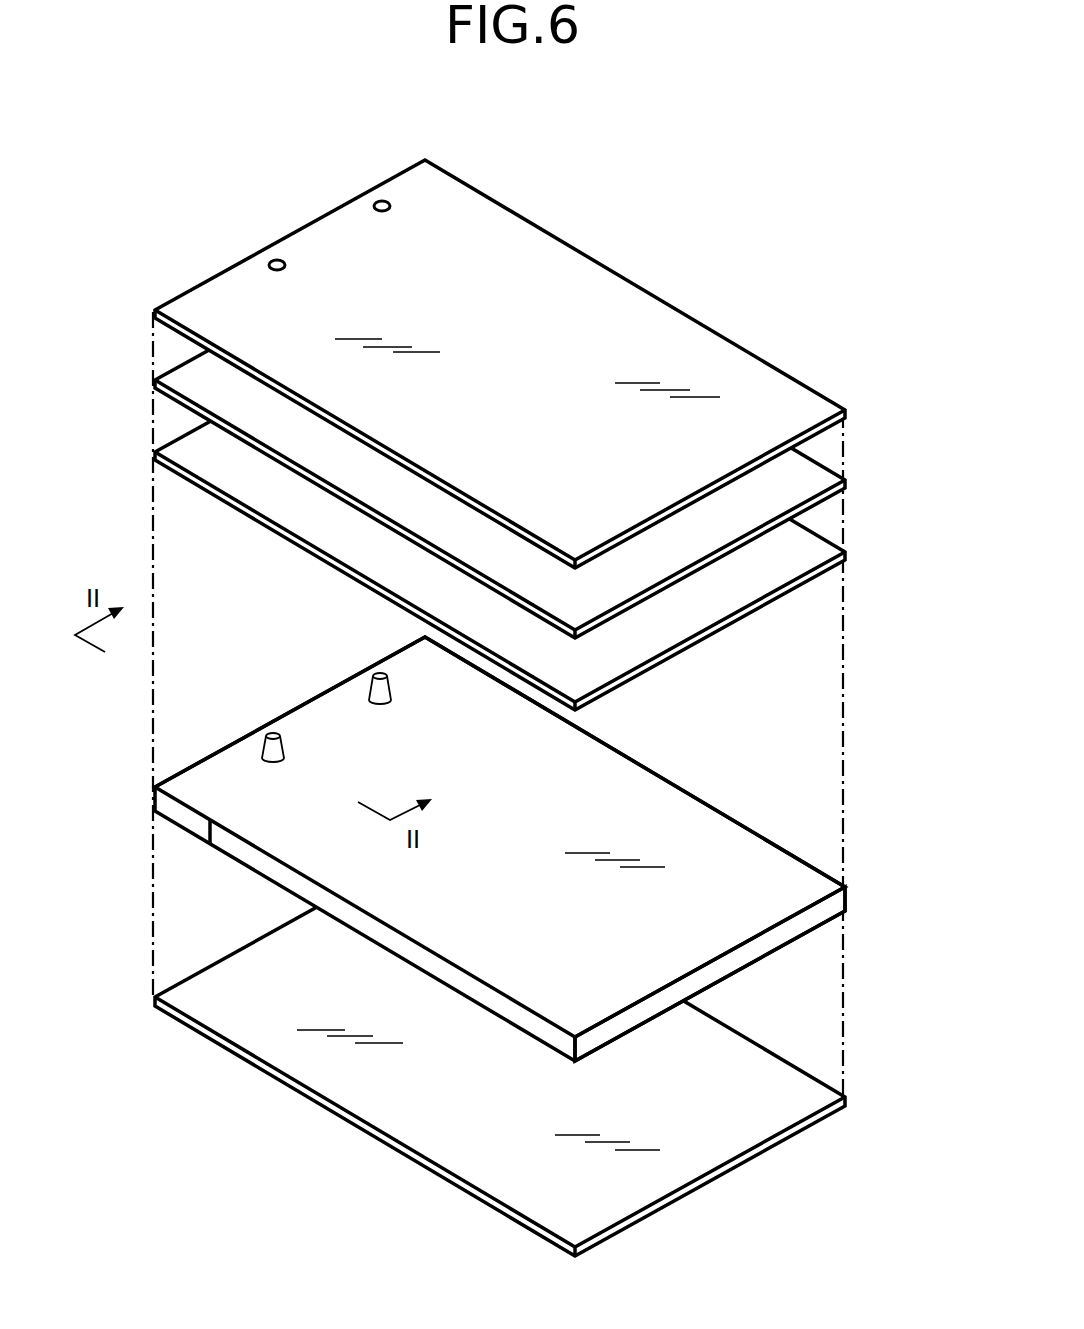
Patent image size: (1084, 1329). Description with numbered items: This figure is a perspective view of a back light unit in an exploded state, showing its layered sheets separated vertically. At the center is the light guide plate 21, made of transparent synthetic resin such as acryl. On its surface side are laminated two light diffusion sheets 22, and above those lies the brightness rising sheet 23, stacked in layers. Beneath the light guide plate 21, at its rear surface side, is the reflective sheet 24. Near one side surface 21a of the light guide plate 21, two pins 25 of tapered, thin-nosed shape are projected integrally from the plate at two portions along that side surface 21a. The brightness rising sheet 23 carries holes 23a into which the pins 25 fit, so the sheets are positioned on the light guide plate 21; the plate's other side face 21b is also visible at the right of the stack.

The light guide plate 21 is at (545, 825).
The one side surface 21a is at (305, 707).
The side surface of light guide plate 21b is at (777, 937).
The light diffusion sheet 22 is at (812, 545).
The brightness rising sheet 23 is at (500, 333).
The holes 23a is at (382, 201).
The reflective sheet 24 is at (727, 1127).
The pins 25 is at (353, 673).